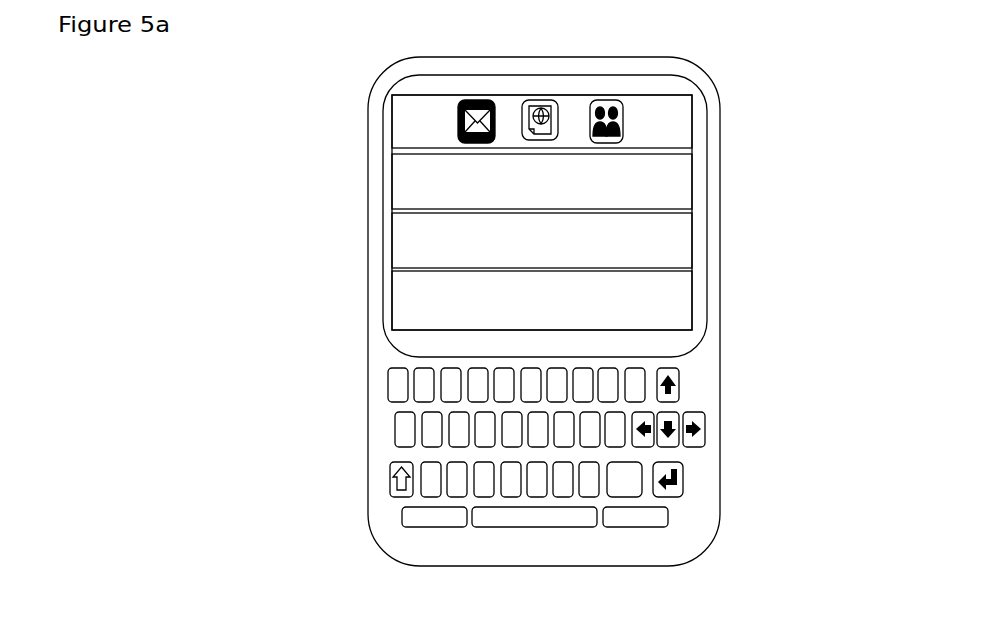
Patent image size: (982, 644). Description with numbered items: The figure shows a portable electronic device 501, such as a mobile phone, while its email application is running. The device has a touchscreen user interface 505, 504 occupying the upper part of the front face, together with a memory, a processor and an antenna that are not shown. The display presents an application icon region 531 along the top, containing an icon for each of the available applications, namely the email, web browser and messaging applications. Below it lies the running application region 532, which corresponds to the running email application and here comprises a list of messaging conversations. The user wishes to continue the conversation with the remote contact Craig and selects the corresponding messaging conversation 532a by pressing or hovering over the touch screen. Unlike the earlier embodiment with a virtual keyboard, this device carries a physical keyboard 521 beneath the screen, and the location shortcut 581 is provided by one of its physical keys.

The portable electronic device 501 is at (780, 69).
The touchscreen user interface 504 is at (698, 150).
The touchscreen user interface 505 is at (695, 307).
The application icon region 531 is at (393, 145).
The messaging conversation 532a is at (396, 180).
The running application region 532 is at (393, 223).
The physical keyboard 521 is at (390, 373).
The location shortcut 581 is at (655, 520).